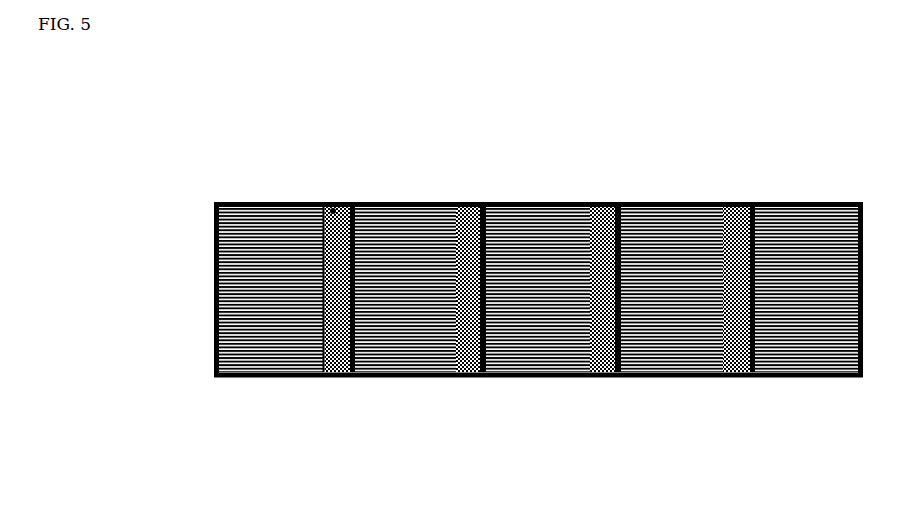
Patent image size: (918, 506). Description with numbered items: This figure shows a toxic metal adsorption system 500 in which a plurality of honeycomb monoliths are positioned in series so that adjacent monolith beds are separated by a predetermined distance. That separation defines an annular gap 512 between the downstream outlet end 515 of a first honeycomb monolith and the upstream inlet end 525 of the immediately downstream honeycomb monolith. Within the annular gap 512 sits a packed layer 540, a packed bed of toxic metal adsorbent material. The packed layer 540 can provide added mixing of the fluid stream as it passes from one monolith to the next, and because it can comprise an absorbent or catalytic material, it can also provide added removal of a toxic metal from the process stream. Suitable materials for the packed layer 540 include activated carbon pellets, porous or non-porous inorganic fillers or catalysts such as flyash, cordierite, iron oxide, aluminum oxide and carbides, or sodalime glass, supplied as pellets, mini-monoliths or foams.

The photovoltaic module / cell array 500 is at (142, 187).
The annular gap 512 is at (339, 388).
The edge of first cell 515 is at (320, 200).
The edge of second cell 525 is at (354, 200).
The packed layer 540 is at (332, 208).